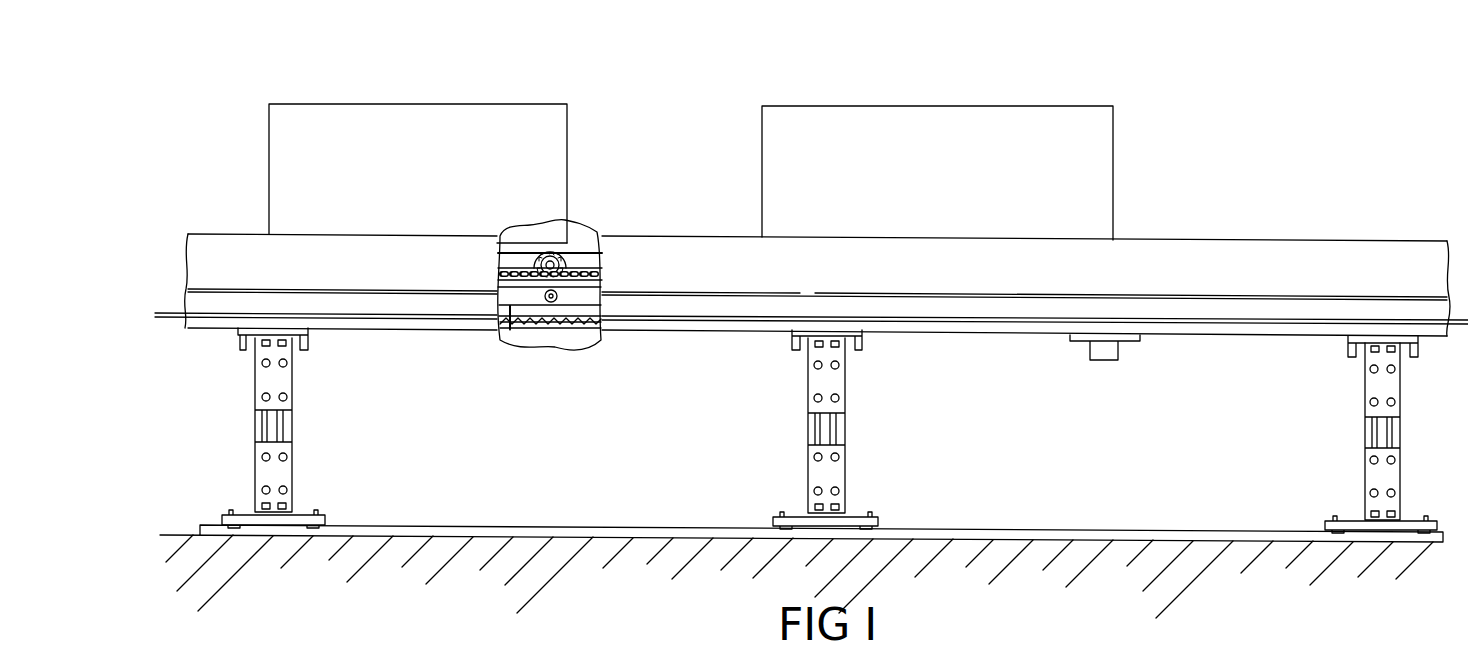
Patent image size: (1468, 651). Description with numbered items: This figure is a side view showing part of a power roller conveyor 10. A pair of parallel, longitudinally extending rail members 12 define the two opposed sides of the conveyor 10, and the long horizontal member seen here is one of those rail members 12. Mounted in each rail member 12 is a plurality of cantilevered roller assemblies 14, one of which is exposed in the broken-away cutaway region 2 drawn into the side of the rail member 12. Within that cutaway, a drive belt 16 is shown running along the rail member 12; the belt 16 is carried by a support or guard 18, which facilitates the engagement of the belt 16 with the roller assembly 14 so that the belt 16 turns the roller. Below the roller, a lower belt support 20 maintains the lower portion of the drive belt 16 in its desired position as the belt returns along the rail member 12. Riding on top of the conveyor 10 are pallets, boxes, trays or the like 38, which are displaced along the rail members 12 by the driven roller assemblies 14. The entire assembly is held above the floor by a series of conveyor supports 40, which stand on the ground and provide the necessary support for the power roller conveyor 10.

The power roller conveyor 10 is at (882, 93).
The rail member 12 is at (1237, 242).
The drive unit detail 2 is at (589, 228).
The cantilevered roller assembly 14 is at (568, 256).
The drive belt 16 is at (588, 292).
The support or guard 18 is at (508, 332).
The lower belt support 20 is at (525, 335).
The pallets, boxes, trays or the like 38 is at (567, 120).
The conveyor support 40 is at (292, 456).